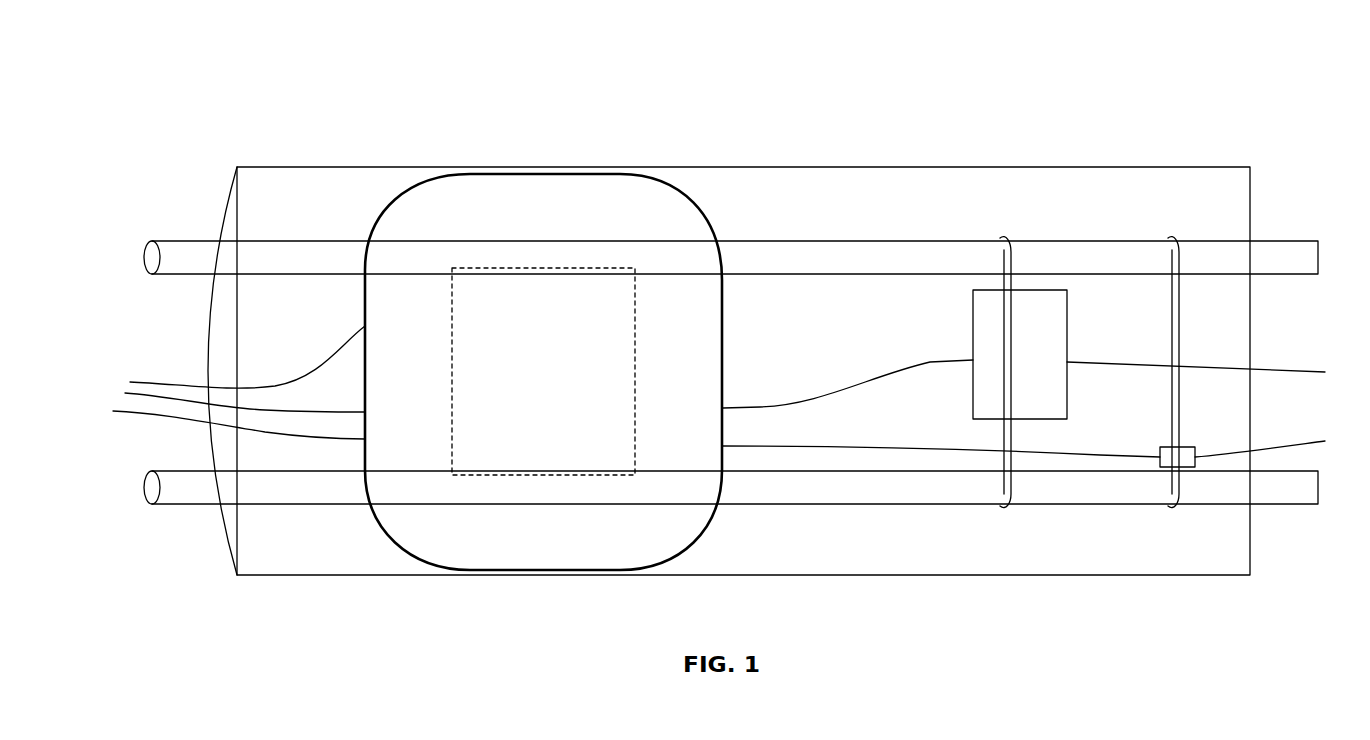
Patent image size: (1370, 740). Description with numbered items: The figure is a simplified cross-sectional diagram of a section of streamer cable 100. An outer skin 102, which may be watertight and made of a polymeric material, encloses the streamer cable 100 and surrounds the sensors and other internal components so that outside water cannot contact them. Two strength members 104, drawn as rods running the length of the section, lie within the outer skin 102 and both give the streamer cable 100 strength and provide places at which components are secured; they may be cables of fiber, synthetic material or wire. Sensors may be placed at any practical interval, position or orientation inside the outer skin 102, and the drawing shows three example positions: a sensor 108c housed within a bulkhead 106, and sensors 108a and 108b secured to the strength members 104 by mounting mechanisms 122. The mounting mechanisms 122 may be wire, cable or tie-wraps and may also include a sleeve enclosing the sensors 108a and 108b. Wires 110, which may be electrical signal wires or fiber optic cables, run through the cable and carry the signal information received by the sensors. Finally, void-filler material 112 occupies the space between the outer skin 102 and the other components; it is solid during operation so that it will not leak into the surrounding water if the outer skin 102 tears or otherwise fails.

The streamer cable 100 is at (843, 86).
The outer skin 102 is at (785, 167).
The strength members 104 is at (168, 240).
The bulkhead 106 is at (680, 197).
The sensor 108a is at (1067, 331).
The sensor 108b is at (1192, 447).
The sensor 108c is at (538, 268).
The wires 110 is at (160, 382).
The void-filler material 112 is at (880, 206).
The mounting mechanisms 122 is at (1010, 285).